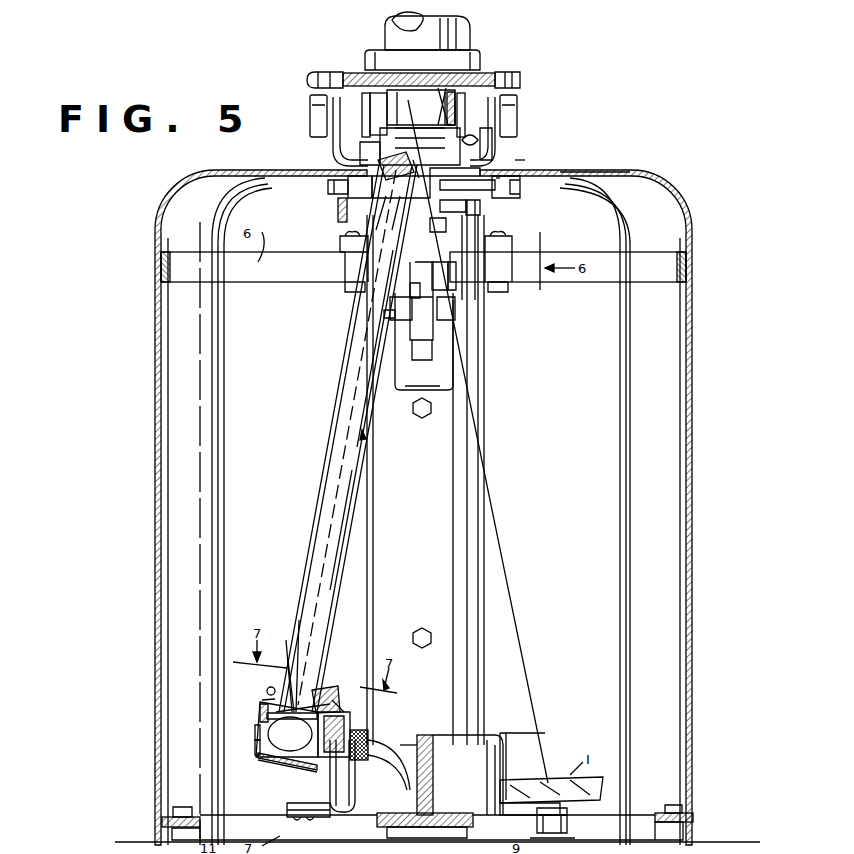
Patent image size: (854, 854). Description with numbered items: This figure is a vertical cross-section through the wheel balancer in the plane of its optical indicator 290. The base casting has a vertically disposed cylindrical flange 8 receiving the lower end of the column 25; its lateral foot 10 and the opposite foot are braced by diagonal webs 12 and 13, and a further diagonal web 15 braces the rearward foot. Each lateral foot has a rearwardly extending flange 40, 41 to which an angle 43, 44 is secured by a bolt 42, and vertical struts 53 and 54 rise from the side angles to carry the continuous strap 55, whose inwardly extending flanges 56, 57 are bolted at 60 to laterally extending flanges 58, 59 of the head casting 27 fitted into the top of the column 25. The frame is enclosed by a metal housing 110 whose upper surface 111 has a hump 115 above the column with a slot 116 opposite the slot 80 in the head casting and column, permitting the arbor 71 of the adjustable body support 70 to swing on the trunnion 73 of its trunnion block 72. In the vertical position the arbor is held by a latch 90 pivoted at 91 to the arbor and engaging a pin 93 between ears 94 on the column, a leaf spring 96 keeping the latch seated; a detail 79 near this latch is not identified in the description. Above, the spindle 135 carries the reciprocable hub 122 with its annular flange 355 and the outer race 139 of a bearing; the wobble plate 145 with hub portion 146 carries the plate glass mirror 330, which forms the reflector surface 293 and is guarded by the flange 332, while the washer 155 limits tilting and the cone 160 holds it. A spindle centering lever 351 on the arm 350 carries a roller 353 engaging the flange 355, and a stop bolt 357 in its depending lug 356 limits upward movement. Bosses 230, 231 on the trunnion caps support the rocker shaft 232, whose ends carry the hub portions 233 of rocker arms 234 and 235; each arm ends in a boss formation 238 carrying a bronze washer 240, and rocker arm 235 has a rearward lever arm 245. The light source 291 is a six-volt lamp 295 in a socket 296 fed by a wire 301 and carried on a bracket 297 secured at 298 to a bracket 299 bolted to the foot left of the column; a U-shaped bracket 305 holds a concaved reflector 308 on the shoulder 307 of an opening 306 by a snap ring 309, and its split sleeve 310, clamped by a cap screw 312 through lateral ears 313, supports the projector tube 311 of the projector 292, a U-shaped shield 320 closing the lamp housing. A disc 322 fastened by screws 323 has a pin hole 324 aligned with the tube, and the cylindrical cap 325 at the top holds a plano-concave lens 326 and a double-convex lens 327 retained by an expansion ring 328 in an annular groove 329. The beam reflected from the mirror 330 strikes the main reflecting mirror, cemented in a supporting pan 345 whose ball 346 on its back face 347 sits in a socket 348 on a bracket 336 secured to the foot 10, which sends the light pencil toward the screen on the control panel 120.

The housing 110 is at (690, 408).
The upper surface 111 is at (600, 170).
The vertical strut 54 is at (172, 462).
The vertical strut 53 is at (683, 472).
The strap 55 is at (423, 267).
The column 25 is at (425, 480).
The optical indicator 290 is at (336, 436).
The projector 292 is at (330, 484).
The projector tube 311 is at (312, 565).
The washer 155 is at (470, 48).
The cone 160 is at (386, 20).
The spindle 135 is at (368, 34).
The hub portion 146 is at (482, 56).
The flange 332 is at (490, 70).
The wobble plate 145 is at (522, 76).
The plate glass mirror 330 is at (360, 82).
The spindle centering lever 351 is at (442, 82).
The bronze washer 240 is at (312, 110).
The boss formation 238 is at (425, 111).
The reflector surface 293 is at (373, 110).
The slot 116 is at (462, 102).
The rocker arm 235 is at (348, 158).
The rocker arm 234 is at (495, 156).
The cylindrical cap 325 is at (360, 146).
The annular flange 355 is at (405, 145).
The control panel 120 is at (408, 125).
The outer race 139 is at (409, 137).
The reciprocable hub 122 is at (409, 147).
The double-convex lens 327 is at (393, 164).
The expansion ring 328 is at (422, 163).
The roller 353 is at (462, 112).
The depending lug 356 is at (495, 135).
The hump 115 is at (490, 146).
The stop bolt 357 is at (525, 160).
The arm 350 is at (455, 176).
The arbor 71 is at (467, 188).
The boss 230 is at (488, 182).
The boss 231 is at (361, 187).
The plano-concave lens 326 is at (401, 187).
The rocker shaft 232 is at (330, 186).
The hub portion 233 is at (338, 198).
The lever arm 245 is at (338, 210).
The annular groove 329 is at (390, 211).
The trunnion block 72 is at (470, 208).
The trunnion 73 is at (480, 202).
The adjustable body support 70 is at (446, 222).
The head casting 27 is at (490, 228).
The laterally extending flange 58 is at (508, 240).
The laterally extending flange 59 is at (338, 248).
The bolt 60 is at (342, 276).
The inwardly extending flange 57 is at (345, 280).
The inwardly extending flange 56 is at (515, 282).
The slot 80 is at (420, 272).
The sleeve 79 is at (436, 268).
The leaf spring 96 is at (459, 277).
The pin 93 is at (455, 308).
The ears 94 is at (455, 318).
The pivot connection 91 is at (387, 321).
The latch 90 is at (432, 330).
The pin hole 324 is at (282, 666).
The disc 322 is at (279, 683).
The split sleeve 310 is at (322, 690).
The U-shaped bracket 305 is at (322, 706).
The cap screw 312 is at (268, 686).
The lateral ears 313 is at (266, 700).
The light source 291 is at (347, 702).
The U-shaped shield 320 is at (270, 714).
The socket 296 is at (343, 732).
The screws 323 is at (289, 718).
The concaved reflector 308 is at (262, 736).
The shoulder 307 is at (260, 750).
The lamp 295 is at (287, 729).
The snap ring 309 is at (262, 760).
The opening 306 is at (300, 765).
The wire 301 is at (404, 770).
The diagonal web 13 is at (345, 798).
The bracket 297 is at (300, 796).
The securing point 298 is at (300, 810).
The bracket 299 is at (296, 818).
The diagonal web 15 is at (444, 745).
The cylindrical flange 8 is at (440, 786).
The diagonal web 12 is at (512, 770).
The supporting pan 345 is at (548, 780).
The ball 346 is at (560, 800).
The back face 347 is at (536, 818).
The bracket 336 is at (568, 830).
The socket 348 is at (542, 838).
The foot 10 is at (590, 836).
The bolt 42 is at (175, 810).
The angle 44 is at (172, 822).
The rearwardly extending flange 41 is at (172, 834).
The rearwardly extending flange 40 is at (690, 816).
The angle 43 is at (690, 826).